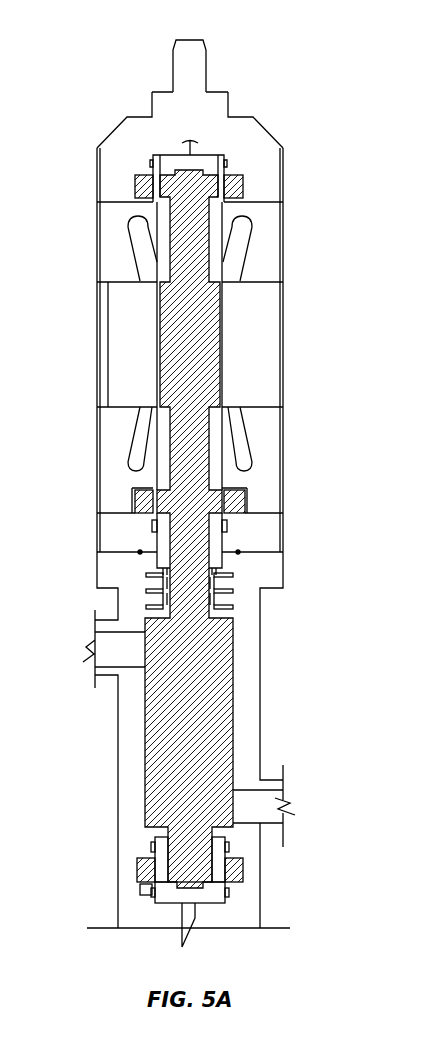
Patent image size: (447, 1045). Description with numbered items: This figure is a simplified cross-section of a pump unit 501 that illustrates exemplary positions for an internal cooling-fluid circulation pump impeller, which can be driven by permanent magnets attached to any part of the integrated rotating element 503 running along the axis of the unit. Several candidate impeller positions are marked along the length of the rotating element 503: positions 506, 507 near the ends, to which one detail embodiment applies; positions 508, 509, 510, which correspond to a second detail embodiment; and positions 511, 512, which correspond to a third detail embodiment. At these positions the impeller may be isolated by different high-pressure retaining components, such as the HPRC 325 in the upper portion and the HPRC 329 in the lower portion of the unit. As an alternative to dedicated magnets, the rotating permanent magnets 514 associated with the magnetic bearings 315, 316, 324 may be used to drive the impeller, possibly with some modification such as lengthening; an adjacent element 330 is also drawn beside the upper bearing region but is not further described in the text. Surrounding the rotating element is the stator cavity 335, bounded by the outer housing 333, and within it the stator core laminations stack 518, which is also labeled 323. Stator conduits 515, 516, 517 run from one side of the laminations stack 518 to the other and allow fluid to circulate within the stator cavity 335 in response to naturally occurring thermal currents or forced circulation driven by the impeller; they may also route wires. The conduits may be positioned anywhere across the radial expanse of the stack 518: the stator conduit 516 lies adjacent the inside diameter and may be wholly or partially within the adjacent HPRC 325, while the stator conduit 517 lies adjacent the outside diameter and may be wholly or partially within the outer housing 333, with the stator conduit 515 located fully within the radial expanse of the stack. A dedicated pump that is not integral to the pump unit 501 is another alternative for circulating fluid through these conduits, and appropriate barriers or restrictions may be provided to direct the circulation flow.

The pump unit 501 is at (123, 60).
The integrated rotating element 503 is at (178, 452).
The position 506 is at (162, 149).
The position 507 is at (173, 907).
The position 508 is at (127, 172).
The position 509 is at (127, 520).
The position 510 is at (133, 848).
The position 511 is at (127, 212).
The position 512 is at (127, 480).
The rotating permanent magnets 514 is at (215, 180).
The stator conduit 515 is at (108, 317).
The stator conduit 516 is at (225, 317).
The stator conduit 517 is at (276, 364).
The stator core laminations stack 518 is at (265, 392).
The housing wall 323 is at (243, 386).
The magnetic bearing 324 is at (233, 180).
The HPRC 325 is at (216, 207).
The HPRC 329 is at (228, 838).
The upper right nut 330 is at (244, 186).
The outer housing 333 is at (284, 273).
The stator cavity 335 is at (270, 248).
The magnetic bearing 315 is at (242, 873).
The magnetic bearing 316 is at (233, 502).